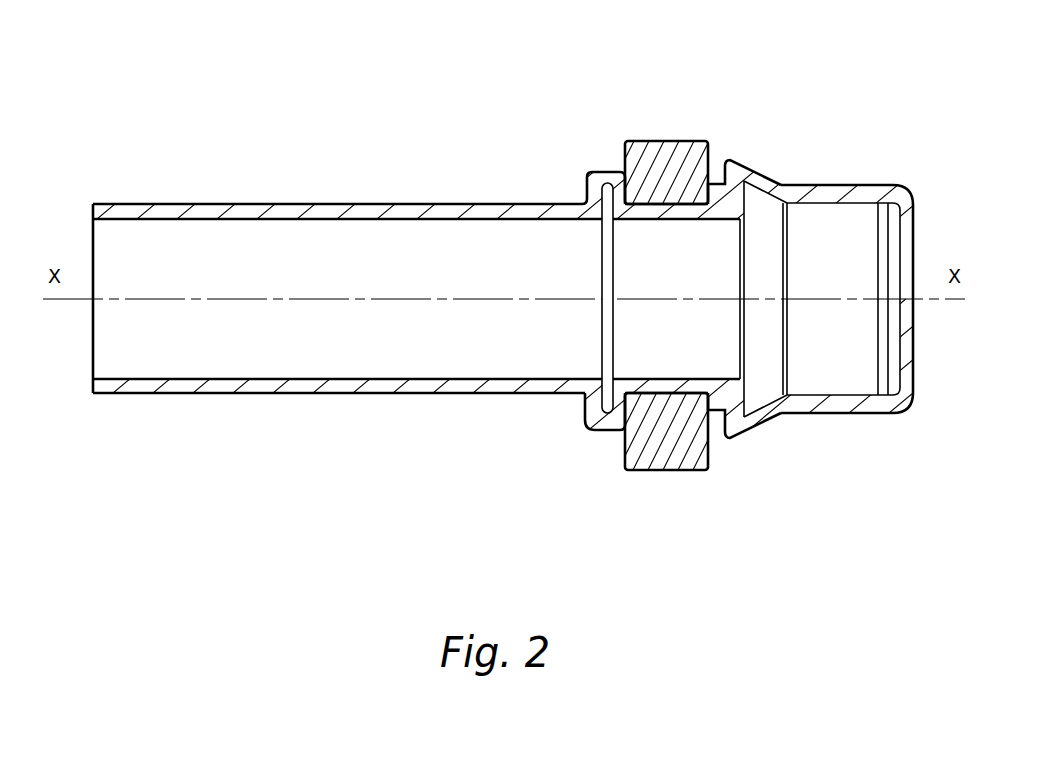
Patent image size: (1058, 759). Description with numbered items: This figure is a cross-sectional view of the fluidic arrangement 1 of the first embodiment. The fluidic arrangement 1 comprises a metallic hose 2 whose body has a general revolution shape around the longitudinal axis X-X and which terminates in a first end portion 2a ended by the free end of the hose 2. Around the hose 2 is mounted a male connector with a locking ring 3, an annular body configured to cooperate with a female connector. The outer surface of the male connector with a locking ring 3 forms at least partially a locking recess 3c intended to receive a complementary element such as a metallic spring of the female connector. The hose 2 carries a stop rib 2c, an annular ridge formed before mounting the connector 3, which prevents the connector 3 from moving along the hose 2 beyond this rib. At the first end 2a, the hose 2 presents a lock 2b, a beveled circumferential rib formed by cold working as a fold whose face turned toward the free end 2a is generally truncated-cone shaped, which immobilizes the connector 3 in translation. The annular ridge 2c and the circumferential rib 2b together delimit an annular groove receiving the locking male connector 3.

The fluidic arrangement 1 is at (513, 309).
The hose 2 is at (410, 400).
The first end portion 2a is at (865, 186).
The lock 2b is at (757, 173).
The stop rib 2c is at (595, 171).
The male connector with a locking ring 3 is at (683, 141).
The locking recess 3c is at (716, 172).